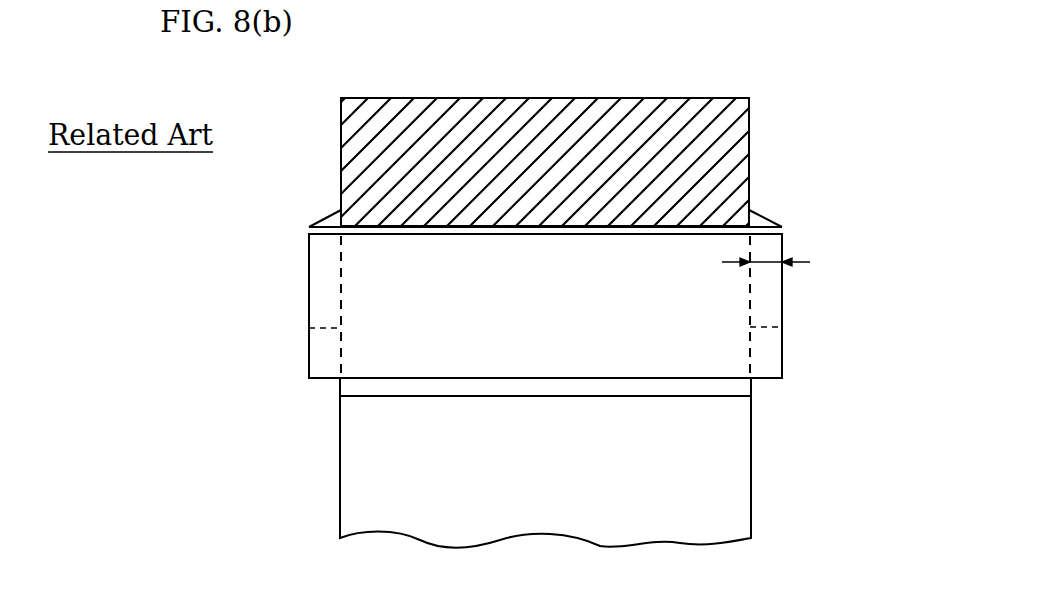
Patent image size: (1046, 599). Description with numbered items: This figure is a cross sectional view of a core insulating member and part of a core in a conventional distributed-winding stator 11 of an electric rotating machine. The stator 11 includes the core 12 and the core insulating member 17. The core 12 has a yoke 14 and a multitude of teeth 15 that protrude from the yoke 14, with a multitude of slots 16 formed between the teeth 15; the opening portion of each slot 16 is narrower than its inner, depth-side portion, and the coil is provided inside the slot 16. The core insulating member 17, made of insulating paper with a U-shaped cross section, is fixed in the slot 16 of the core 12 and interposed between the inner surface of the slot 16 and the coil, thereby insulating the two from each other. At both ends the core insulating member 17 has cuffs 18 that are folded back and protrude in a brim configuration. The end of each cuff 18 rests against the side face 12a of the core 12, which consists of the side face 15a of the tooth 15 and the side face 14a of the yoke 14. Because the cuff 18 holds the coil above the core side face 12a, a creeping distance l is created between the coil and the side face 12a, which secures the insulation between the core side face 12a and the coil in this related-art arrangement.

The distributed-winding stator 11 is at (681, 85).
The core 12 is at (567, 96).
The side face of the core 12a is at (341, 110).
The yoke 14 is at (749, 152).
The side face of the yoke 14a is at (341, 147).
The tooth 15 is at (752, 390).
The side face of the tooth 15a is at (309, 329).
The slot 16 is at (693, 387).
The core insulating member 17 is at (787, 295).
The cuff 18 is at (334, 216).
The creeping distance l is at (772, 264).